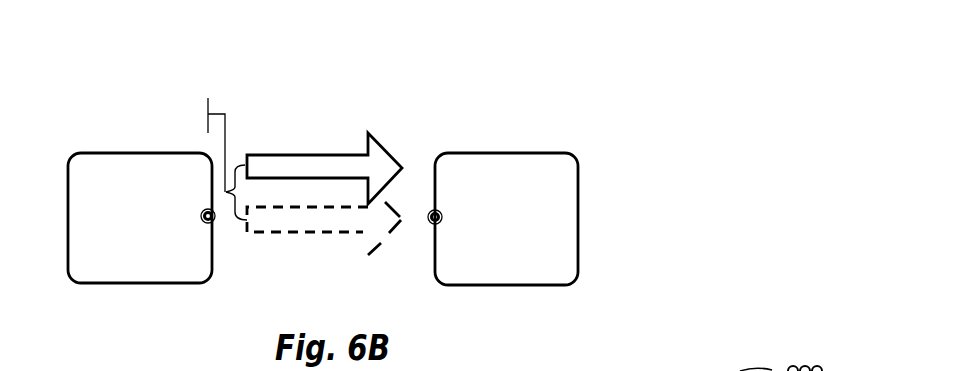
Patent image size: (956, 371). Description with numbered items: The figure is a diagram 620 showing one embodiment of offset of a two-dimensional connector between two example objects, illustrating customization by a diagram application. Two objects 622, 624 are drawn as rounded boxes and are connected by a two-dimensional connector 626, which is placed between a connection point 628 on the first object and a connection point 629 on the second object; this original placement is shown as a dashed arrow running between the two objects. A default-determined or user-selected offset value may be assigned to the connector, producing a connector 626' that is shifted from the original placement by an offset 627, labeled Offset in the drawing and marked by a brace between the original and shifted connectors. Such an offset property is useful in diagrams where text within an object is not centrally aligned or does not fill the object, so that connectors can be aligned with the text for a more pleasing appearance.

The diagram 620 is at (677, 53).
The object 622 is at (76, 154).
The object 624 is at (575, 158).
The 2D connector 626 is at (324, 247).
The connector 626' is at (337, 136).
The offset 627 is at (238, 170).
The connection point 628 is at (210, 223).
The connection point 629 is at (434, 225).